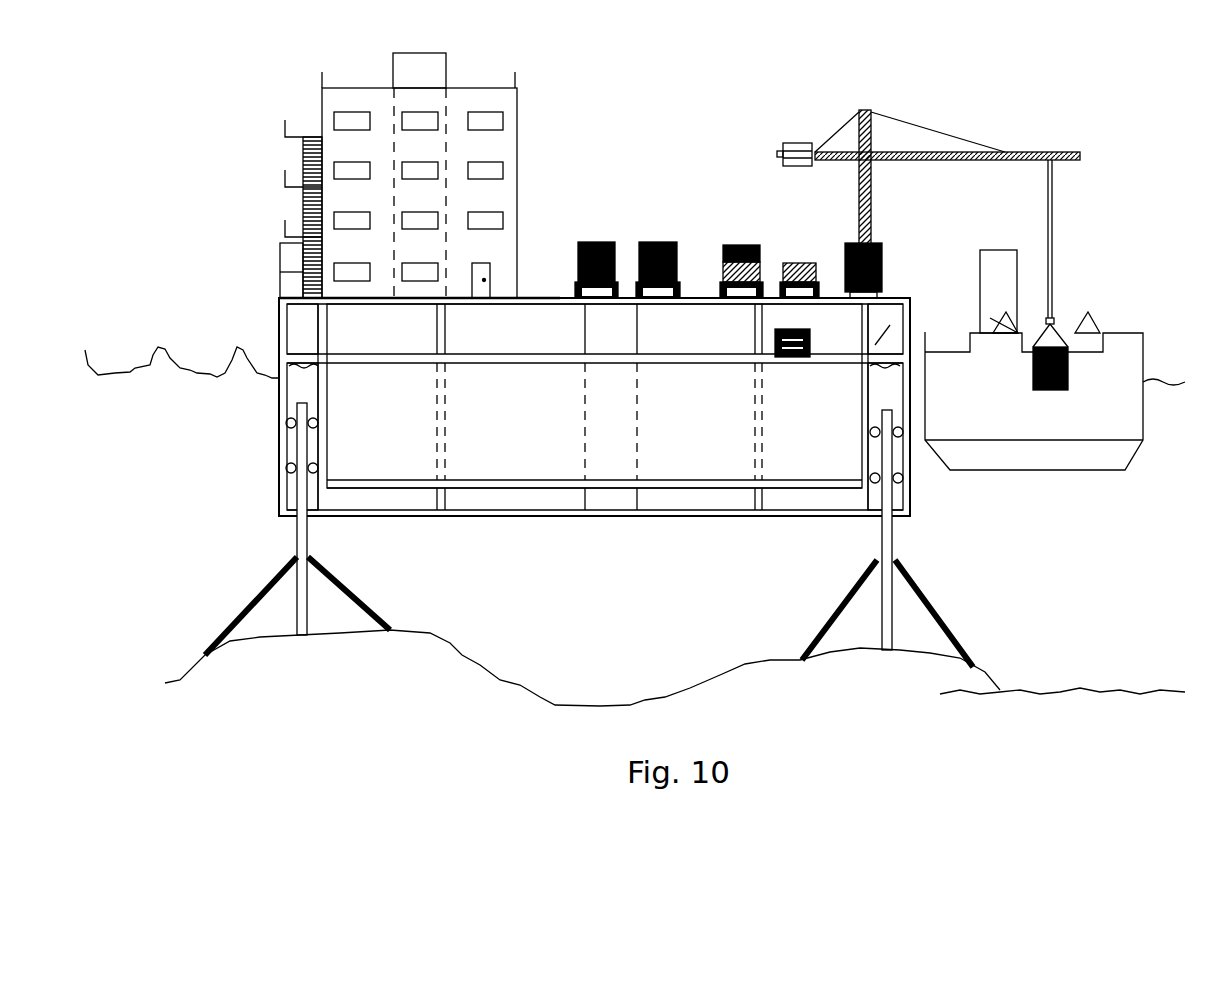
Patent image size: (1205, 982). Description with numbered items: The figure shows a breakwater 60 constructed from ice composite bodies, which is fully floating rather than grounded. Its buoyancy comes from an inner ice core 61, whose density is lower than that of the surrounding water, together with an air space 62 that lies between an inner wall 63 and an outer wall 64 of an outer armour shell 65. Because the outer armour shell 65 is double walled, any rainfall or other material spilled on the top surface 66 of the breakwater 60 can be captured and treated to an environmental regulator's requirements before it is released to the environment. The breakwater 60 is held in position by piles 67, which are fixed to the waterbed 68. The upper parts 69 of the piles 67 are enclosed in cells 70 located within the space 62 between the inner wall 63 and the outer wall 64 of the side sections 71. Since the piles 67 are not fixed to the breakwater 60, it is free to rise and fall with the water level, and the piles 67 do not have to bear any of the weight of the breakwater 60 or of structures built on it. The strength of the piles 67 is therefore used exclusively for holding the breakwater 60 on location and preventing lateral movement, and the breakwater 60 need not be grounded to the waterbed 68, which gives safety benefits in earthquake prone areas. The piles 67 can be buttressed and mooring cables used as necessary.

The breakwater 60 is at (198, 146).
The inner ice core 61 is at (470, 450).
The air space 62 is at (822, 497).
The inner wall 63 is at (322, 405).
The outer wall 64 is at (282, 357).
The outer armour shell 65 is at (708, 517).
The top surface 66 is at (697, 298).
The piles 67 is at (297, 545).
The waterbed 68 is at (462, 655).
The upper parts 69 is at (300, 445).
The cells 70 is at (300, 383).
The side sections 71 is at (300, 320).